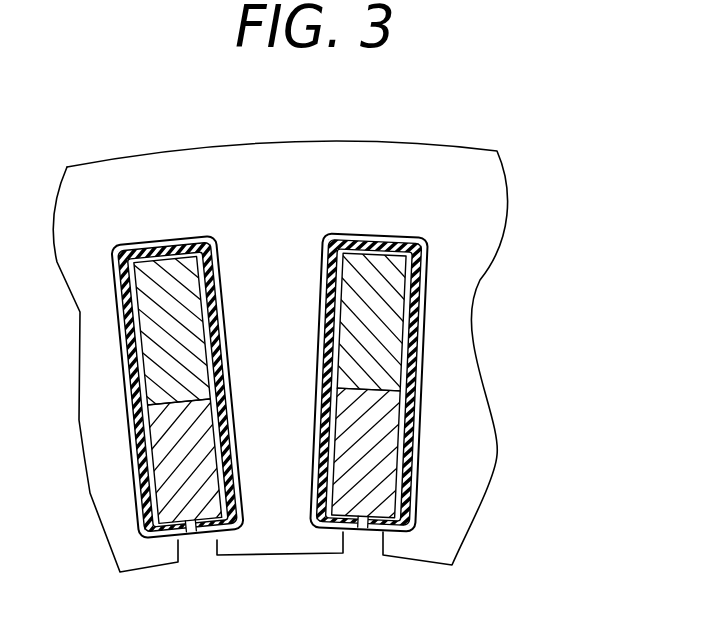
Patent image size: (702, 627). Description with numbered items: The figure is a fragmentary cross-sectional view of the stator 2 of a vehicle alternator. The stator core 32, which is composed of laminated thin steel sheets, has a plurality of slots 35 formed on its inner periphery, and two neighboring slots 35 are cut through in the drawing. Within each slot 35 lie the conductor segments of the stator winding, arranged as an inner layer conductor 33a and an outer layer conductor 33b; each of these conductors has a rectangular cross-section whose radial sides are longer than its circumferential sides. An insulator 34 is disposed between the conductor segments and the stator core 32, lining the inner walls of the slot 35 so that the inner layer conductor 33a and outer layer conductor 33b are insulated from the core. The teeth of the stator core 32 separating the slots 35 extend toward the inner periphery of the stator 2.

The stator 2 is at (535, 172).
The stator core 32 is at (298, 165).
The inner layer conductor 33a is at (383, 463).
The outer layer conductor 33b is at (385, 273).
The insulator 34 is at (418, 308).
The slot 35 is at (153, 240).